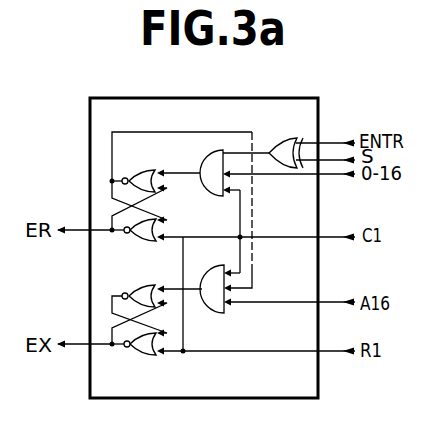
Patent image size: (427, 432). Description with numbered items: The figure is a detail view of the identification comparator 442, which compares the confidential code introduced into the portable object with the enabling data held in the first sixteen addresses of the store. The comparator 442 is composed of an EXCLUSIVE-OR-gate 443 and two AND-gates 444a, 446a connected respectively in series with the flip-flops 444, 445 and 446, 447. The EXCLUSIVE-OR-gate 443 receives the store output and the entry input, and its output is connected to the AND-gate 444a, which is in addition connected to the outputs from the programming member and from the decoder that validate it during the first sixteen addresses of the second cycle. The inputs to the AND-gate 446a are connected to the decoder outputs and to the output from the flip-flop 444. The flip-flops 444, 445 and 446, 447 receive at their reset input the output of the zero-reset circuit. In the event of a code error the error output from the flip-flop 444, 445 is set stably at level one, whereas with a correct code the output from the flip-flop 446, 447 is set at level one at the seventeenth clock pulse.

The comparator 442 is at (294, 104).
The EXCLUSIVE-OR-gate 443 is at (280, 147).
The flip-flop 444 is at (147, 171).
The AND-gate 444a is at (206, 186).
The flip-flop 445 is at (149, 246).
The flip-flop 446 is at (142, 288).
The AND-gate 446a is at (213, 313).
The flip-flop 447 is at (153, 356).